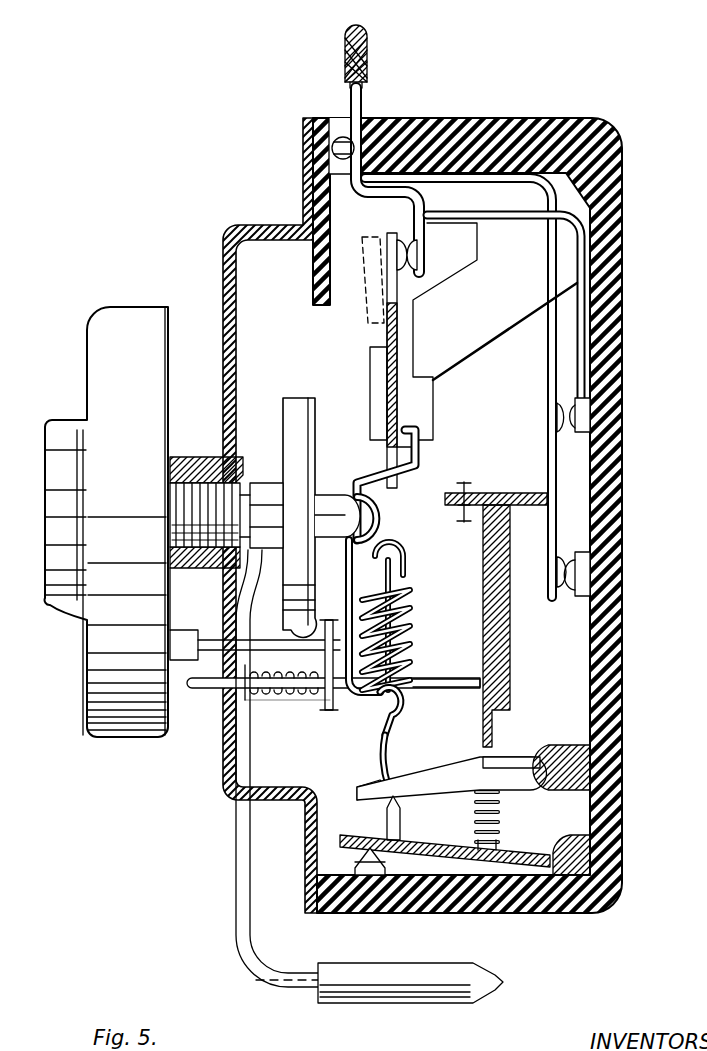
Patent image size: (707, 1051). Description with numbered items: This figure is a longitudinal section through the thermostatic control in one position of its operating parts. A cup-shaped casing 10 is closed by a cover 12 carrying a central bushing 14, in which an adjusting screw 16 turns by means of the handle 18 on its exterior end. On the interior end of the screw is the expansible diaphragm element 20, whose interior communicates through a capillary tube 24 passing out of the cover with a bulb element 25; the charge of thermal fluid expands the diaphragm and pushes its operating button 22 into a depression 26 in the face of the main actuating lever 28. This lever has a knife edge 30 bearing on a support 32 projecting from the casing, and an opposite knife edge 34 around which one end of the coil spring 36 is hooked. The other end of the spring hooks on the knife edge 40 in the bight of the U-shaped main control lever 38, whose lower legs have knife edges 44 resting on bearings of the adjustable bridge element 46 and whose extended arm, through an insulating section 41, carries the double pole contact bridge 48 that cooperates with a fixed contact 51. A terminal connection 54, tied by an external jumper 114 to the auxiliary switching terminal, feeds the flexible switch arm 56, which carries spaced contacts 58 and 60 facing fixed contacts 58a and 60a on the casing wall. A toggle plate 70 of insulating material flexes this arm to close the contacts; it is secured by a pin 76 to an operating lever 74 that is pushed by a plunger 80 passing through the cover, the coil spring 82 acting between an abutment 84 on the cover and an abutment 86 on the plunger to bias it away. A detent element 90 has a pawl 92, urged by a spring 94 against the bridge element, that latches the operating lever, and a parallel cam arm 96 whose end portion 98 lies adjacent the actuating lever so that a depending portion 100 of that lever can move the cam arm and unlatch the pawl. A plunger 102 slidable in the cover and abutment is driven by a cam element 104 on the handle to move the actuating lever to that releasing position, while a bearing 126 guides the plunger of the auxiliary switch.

The casing 10 is at (622, 190).
The cover 12 is at (225, 250).
The bushing 14 is at (185, 457).
The adjusting screw 16 is at (200, 495).
The handle 18 is at (87, 360).
The diaphragm element 20 is at (295, 400).
The operating button 22 is at (322, 495).
The capillary tube 24 is at (235, 830).
The bulb element 25 is at (370, 965).
The depression 26 is at (355, 510).
The main actuating lever 28 is at (362, 583).
The knife edge 30 is at (415, 435).
The support 32 is at (433, 400).
The knife edge 34 is at (395, 712).
The coil spring 36 is at (410, 610).
The main control lever 38 is at (400, 680).
The knife edge 40 is at (400, 545).
The insulating section 41 is at (388, 330).
The knife edge 44 is at (400, 808).
The adjustable bridge element 46 is at (345, 840).
The double pole contact bridge 48 is at (400, 228).
The fixed contact 51 is at (410, 235).
The terminal connection 54 is at (362, 98).
The flexible switch arm 56 is at (548, 290).
The contact 58 is at (555, 405).
The fixed contact 58a is at (590, 410).
The contact 60 is at (552, 598).
The fixed contact 60a is at (590, 565).
The toggle plate 70 is at (505, 493).
The operating lever 74 is at (505, 648).
The pin 76 is at (464, 482).
The plunger 80 is at (455, 680).
The coil spring 82 is at (290, 700).
The abutment 84 is at (330, 710).
The abutment 86 is at (250, 690).
The detent element 90 is at (545, 760).
The pawl 92 is at (483, 757).
The spring 94 is at (500, 823).
The cam arm 96 is at (423, 770).
The end portion 98 is at (360, 782).
The depending portion 100 is at (380, 745).
The plunger 102 is at (210, 640).
The cam element 104 is at (190, 690).
The external jumper 114 is at (367, 40).
The bearing 126 is at (318, 290).